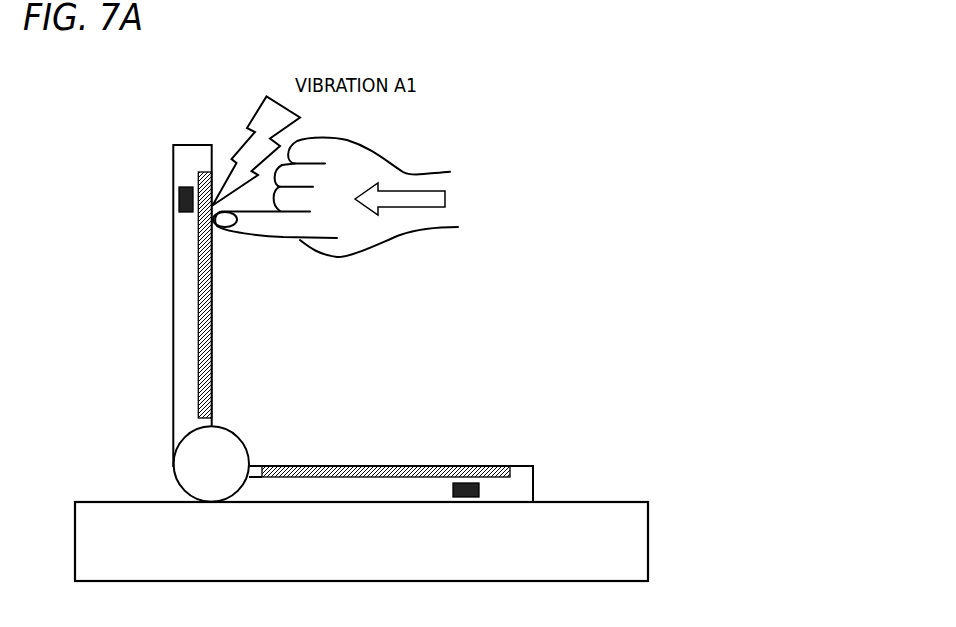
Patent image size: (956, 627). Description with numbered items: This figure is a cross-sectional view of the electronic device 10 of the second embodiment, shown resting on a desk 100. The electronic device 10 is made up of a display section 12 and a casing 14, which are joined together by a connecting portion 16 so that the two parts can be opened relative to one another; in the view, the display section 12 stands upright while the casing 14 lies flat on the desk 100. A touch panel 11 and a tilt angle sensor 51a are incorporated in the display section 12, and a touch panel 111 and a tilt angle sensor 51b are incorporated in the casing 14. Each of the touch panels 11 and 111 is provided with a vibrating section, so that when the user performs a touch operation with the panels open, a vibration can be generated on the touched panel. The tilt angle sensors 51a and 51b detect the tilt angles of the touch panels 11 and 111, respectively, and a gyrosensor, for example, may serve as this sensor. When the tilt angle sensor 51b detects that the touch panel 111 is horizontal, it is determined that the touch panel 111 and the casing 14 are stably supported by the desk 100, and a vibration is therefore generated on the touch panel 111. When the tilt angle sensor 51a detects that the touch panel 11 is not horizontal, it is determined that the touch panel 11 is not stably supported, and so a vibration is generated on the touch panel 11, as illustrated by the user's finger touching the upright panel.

The electronic device 10 is at (160, 118).
The display section 12 is at (182, 287).
The touch panel 11 is at (197, 382).
The tilt angle sensor 51a is at (182, 197).
The connecting portion 16 is at (195, 462).
The casing 14 is at (519, 488).
The touch panel 111 is at (377, 463).
The tilt angle sensor 51b is at (468, 483).
The desk 100 is at (637, 539).